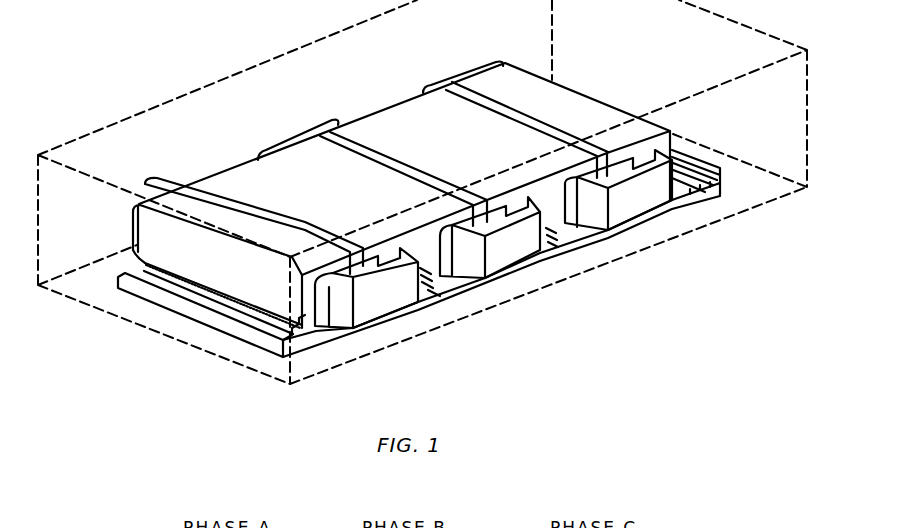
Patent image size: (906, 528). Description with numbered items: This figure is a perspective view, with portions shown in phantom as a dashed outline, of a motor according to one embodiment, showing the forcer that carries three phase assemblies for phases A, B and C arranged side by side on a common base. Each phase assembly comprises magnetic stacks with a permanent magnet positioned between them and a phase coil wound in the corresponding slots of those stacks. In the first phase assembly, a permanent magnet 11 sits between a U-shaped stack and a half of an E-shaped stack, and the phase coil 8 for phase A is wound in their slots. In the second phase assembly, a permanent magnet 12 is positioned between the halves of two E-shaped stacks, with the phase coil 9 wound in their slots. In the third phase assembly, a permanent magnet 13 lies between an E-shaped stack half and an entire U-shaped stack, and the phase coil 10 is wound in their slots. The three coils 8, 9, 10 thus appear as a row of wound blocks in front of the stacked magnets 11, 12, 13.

The phase coil 8 is at (373, 300).
The phase coil 9 is at (505, 253).
The phase coil 10 is at (635, 200).
The permanent magnet 11 is at (298, 225).
The permanent magnet 12 is at (407, 168).
The permanent magnet 13 is at (522, 115).